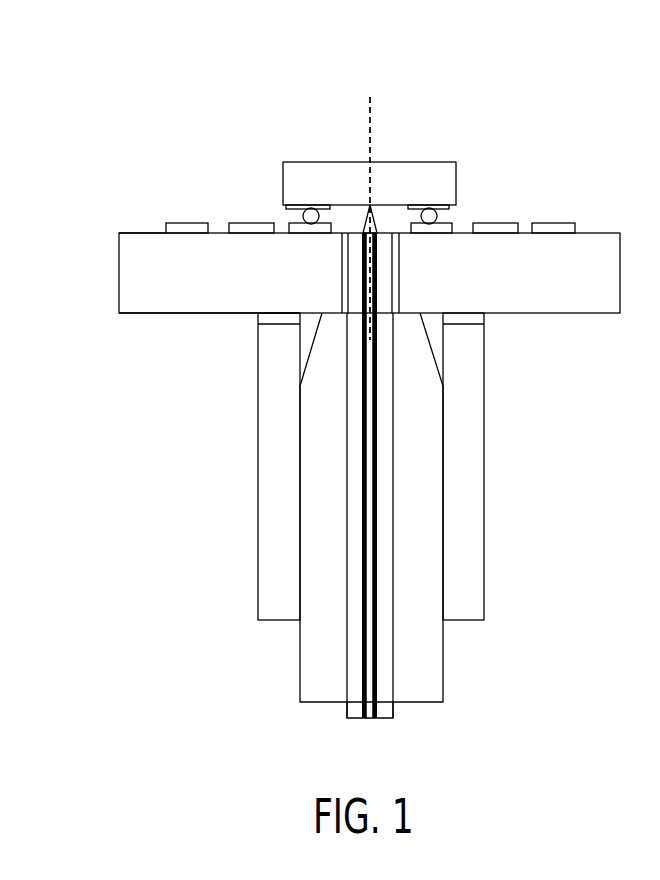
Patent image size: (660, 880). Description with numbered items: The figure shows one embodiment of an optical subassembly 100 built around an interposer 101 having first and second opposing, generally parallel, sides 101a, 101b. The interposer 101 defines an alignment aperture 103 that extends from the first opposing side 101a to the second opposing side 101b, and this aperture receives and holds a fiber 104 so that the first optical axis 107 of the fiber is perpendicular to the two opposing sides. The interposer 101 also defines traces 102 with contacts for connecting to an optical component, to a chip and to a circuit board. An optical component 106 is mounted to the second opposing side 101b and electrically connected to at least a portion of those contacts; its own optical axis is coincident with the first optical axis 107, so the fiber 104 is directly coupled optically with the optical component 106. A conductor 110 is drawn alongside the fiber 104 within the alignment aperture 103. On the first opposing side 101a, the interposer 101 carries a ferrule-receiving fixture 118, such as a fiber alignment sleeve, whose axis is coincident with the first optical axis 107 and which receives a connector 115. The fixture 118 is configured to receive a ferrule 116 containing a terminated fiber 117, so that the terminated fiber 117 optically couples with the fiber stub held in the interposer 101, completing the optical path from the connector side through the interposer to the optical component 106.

The optical subassembly 100 is at (178, 113).
The interposer 101 is at (128, 280).
The first opposing side 101a is at (125, 313).
The second opposing side 101b is at (125, 231).
The traces 102 is at (188, 220).
The alignment aperture 103 is at (387, 243).
The fiber 104 is at (383, 278).
The optical component 106 is at (298, 172).
The first optical axis 107 is at (370, 97).
The conductor 110 is at (369, 475).
The connector 115 is at (307, 635).
The ferrule 116 is at (308, 678).
The terminated fiber 117 is at (387, 707).
The ferrule-receiving fixture 118 is at (270, 560).